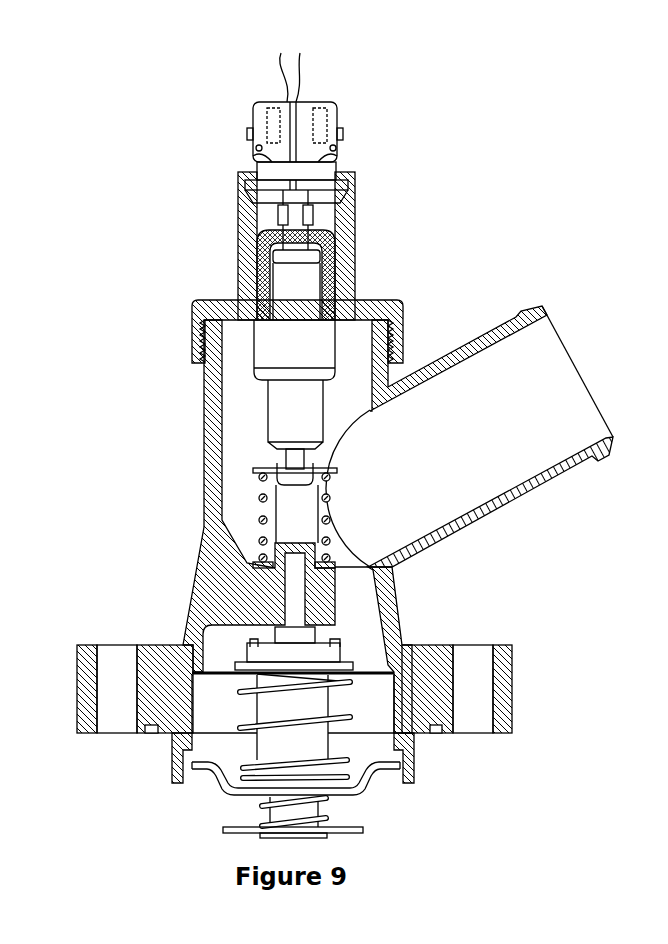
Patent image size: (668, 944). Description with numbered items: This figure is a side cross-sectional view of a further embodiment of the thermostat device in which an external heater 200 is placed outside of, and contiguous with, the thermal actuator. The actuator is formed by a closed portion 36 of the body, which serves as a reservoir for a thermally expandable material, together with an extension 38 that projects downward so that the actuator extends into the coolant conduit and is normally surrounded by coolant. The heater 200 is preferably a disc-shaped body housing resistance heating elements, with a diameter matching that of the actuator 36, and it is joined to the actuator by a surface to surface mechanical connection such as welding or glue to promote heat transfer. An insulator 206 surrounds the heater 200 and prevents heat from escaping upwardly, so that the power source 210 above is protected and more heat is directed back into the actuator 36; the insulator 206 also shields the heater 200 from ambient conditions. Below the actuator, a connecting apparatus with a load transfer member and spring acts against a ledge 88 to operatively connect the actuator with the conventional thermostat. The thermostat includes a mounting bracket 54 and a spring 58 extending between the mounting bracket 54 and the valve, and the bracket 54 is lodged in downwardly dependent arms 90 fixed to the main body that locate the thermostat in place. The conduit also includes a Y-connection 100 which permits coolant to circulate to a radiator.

The power source 210 is at (276, 212).
The insulator 206 is at (327, 233).
The external heater 200 is at (317, 254).
The closed portion 36 is at (310, 277).
The extension 38 is at (317, 405).
The ledge 88 is at (255, 468).
The Y-connection 100 is at (463, 355).
The spring 58 is at (240, 727).
The downwardly dependent arms 90 is at (172, 772).
The mounting bracket 54 is at (362, 790).